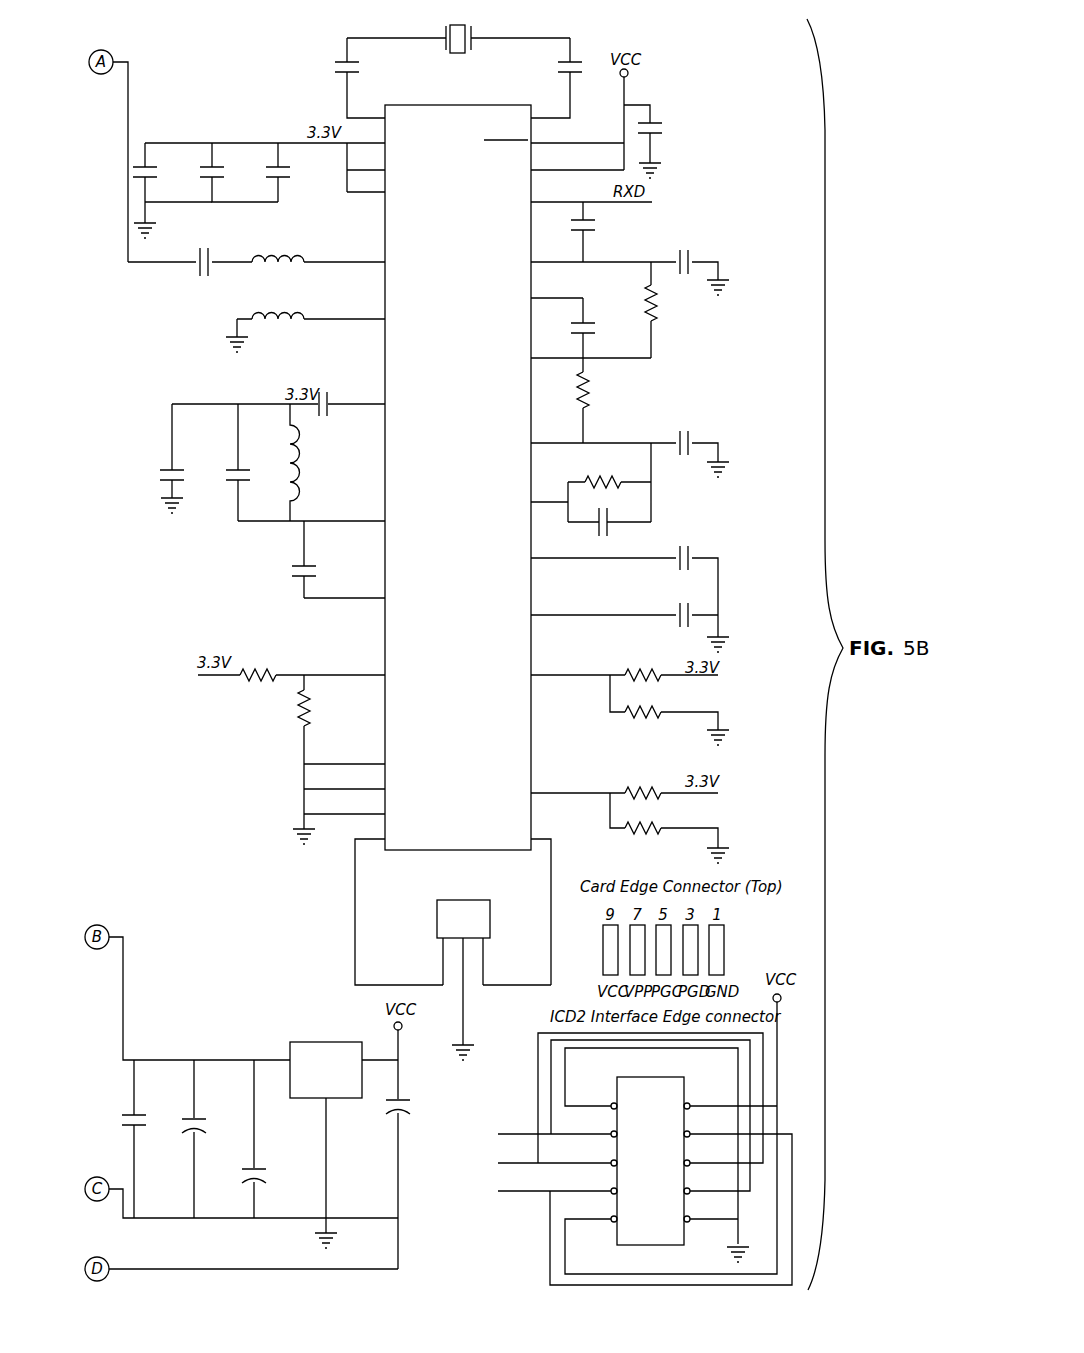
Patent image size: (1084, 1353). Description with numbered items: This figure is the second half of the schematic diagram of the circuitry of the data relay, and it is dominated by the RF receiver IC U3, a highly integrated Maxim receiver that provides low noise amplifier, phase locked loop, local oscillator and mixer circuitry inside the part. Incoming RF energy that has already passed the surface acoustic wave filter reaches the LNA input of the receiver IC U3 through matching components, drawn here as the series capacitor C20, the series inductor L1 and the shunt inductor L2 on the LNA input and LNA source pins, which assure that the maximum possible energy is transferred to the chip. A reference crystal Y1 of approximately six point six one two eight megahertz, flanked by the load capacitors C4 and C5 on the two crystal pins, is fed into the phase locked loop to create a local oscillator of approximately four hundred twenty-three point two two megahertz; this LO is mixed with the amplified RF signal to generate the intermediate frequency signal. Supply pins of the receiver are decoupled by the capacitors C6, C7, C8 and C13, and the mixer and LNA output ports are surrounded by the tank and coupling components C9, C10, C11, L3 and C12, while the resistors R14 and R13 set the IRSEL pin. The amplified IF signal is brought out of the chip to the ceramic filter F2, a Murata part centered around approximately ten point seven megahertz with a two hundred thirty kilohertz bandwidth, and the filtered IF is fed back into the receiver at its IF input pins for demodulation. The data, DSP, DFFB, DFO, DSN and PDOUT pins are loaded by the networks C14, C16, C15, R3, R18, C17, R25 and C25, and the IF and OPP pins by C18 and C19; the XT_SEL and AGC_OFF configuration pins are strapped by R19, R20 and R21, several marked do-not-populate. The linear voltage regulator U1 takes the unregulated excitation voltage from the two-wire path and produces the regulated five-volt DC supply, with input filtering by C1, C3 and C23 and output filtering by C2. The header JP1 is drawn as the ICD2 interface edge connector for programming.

The RF receiver IC U3 is at (460, 481).
The reference crystal Y1 is at (458, 50).
The 15pF capacitor C4 is at (363, 78).
The 15pF capacitor C5 is at (553, 78).
The 0.1uF capacitor C13 is at (665, 141).
The 0.1uF capacitor C6 is at (172, 190).
The 0.01uF capacitor C7 is at (239, 172).
The 0.01uF capacitor C8 is at (305, 172).
The 220pF capacitor C20 is at (203, 265).
The 82nH inductor L1 is at (272, 243).
The 15nH inductor L2 is at (272, 301).
The 100pF capacitor C9 is at (340, 377).
The 220pF capacitor C11 is at (196, 458).
The 2.7pF capacitor C10 is at (259, 462).
The 15nH inductor L3 is at (316, 462).
The 100pF capacitor C12 is at (328, 559).
The resistor D.N.P R14 is at (261, 651).
The 0 ohm resistor R13 is at (329, 759).
The 10pF capacitor C14 is at (602, 232).
The 1000pF capacitor C16 is at (705, 236).
The 470pF capacitor C15 is at (608, 328).
The 10K resistor R3 is at (667, 310).
The 5.1K resistor R18 is at (607, 400).
The 0.47uF capacitor C17 is at (701, 417).
The 33K resistor R25 is at (609, 489).
The 0.47uF capacitor C25 is at (614, 516).
The 1500pF capacitor C18 is at (701, 534).
The 220pF capacitor C19 is at (678, 603).
The resistor D.N.P. R19 is at (654, 665).
The 0 ohm resistor R20 is at (658, 702).
The resistor D.N.P. R21 is at (654, 797).
The SFELF10M7FAOD-BD ceramic filter F2 is at (470, 959).
The ICD2 interface edge connector JP1 is at (645, 1143).
The linear voltage regulator U1 is at (335, 1121).
The 0.1uF capacitor C1 is at (156, 1139).
The 470uF/10V capacitor C3 is at (231, 1139).
The 470uF/10V capacitor C23 is at (296, 1139).
The 10uF capacitor C2 is at (421, 1149).